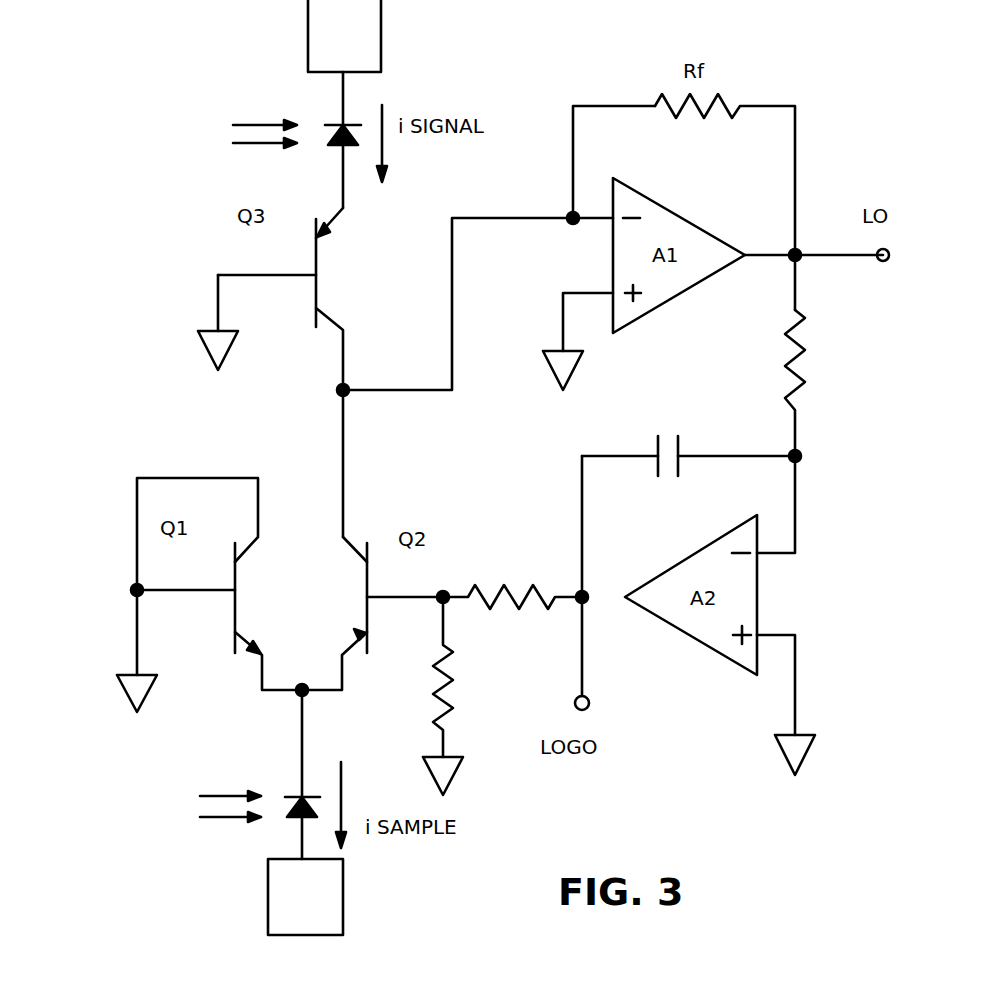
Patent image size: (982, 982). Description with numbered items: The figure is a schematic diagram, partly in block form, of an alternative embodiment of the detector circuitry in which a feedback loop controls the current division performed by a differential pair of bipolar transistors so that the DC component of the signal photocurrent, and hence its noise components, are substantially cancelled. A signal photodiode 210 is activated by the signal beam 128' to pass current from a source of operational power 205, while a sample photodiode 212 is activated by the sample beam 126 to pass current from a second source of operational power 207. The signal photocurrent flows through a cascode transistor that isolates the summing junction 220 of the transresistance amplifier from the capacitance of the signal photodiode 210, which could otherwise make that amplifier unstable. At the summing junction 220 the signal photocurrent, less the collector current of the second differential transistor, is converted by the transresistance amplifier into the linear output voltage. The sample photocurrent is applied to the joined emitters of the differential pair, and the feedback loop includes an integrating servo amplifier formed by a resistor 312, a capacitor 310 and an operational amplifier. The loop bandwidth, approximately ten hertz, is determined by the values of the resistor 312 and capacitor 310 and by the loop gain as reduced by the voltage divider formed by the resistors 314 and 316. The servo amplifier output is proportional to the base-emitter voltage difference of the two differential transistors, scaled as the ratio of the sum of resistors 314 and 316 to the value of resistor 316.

The source of operational power 205 is at (381, 52).
The signal photodiode 210 is at (346, 124).
The signal beam 128' is at (173, 141).
The summing junction 220 is at (345, 389).
The resistor 312 is at (808, 344).
The capacitor 310 is at (680, 452).
The resistor 314 is at (510, 585).
The resistor 316 is at (455, 668).
The sample photodiode 212 is at (292, 796).
The sample beam 126 is at (162, 814).
The source of operational power 207 is at (343, 884).